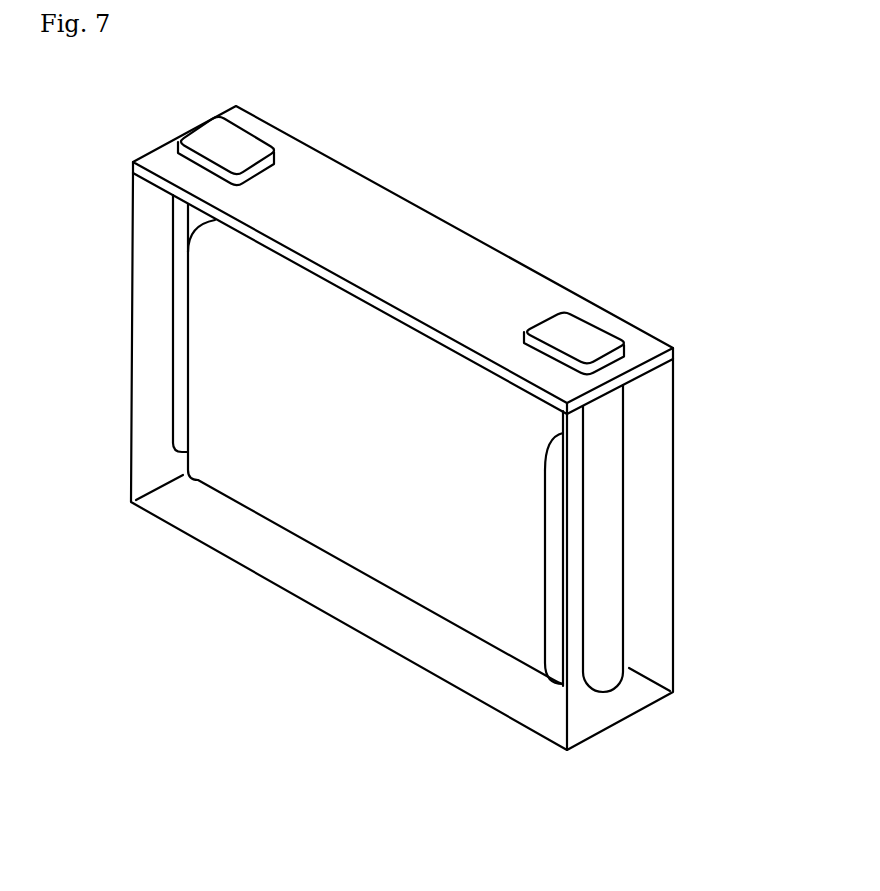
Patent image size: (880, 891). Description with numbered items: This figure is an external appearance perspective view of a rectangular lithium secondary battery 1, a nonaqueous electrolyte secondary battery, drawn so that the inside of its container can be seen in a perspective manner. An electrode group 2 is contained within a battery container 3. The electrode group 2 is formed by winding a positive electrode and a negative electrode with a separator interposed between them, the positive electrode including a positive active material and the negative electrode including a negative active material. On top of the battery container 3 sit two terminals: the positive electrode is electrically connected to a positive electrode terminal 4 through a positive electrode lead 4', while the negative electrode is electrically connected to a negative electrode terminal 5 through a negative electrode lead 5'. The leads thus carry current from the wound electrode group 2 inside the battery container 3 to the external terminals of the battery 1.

The lithium secondary battery 1 is at (547, 212).
The electrode group 2 is at (375, 445).
The battery container 3 is at (131, 279).
The positive electrode terminal 4 is at (226, 118).
The positive electrode lead 4' is at (134, 323).
The negative electrode terminal 5 is at (574, 309).
The negative electrode lead 5' is at (653, 538).